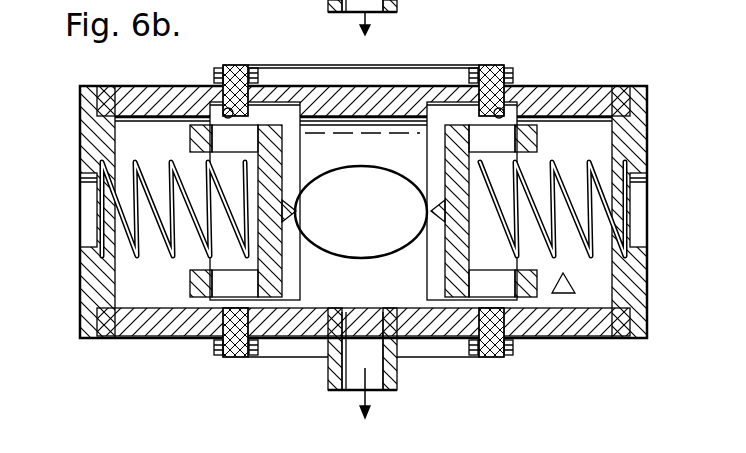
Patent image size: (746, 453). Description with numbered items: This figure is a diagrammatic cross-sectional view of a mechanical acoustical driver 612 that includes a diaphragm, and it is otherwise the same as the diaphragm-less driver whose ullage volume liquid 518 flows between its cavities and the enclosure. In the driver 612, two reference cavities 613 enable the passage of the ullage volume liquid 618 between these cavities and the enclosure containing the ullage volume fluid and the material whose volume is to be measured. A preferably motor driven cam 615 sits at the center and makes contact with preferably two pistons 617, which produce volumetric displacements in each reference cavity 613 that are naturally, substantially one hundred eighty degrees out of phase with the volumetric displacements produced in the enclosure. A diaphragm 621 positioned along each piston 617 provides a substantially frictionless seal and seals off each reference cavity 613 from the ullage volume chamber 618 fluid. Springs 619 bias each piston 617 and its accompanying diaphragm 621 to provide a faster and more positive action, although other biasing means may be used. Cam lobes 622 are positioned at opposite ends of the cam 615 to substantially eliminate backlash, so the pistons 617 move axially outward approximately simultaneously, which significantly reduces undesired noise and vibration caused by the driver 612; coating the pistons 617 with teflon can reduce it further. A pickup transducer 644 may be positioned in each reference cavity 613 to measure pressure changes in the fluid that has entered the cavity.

The mechanical acoustical driver 612 is at (374, 214).
The reference cavity 613 is at (150, 303).
The motor driven cam 615 is at (374, 217).
The piston 617 is at (207, 309).
The spring 619 is at (130, 163).
The diaphragm 621 is at (262, 338).
The cam lobe 622 is at (432, 207).
The pickup transducer 644 is at (575, 289).
The ullage volume chamber 618 is at (372, 375).
The ullage volume liquid 518 is at (417, 0).